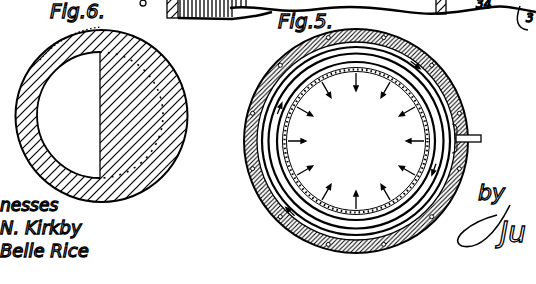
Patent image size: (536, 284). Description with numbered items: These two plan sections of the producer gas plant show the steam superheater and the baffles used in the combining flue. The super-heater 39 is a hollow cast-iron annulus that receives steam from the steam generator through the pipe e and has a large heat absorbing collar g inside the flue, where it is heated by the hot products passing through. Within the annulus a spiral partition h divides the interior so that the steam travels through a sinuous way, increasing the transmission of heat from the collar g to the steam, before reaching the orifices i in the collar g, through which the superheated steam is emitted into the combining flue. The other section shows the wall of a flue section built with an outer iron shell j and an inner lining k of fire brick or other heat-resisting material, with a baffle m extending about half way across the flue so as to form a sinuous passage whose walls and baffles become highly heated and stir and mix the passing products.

In FIG. 6, the outer iron shell j is at (172, 62).
In FIG. 6, the inner lining k is at (33, 112).
In FIG. 6, the baffles m is at (113, 79).
In FIG. 5, the super-heater 39 is at (247, 177).
In FIG. 5, the spiral partition h is at (438, 100).
In FIG. 5, the heat absorbing collar g is at (340, 75).
In FIG. 5, the orifices i is at (413, 170).
In FIG. 5, the pipe e is at (476, 132).